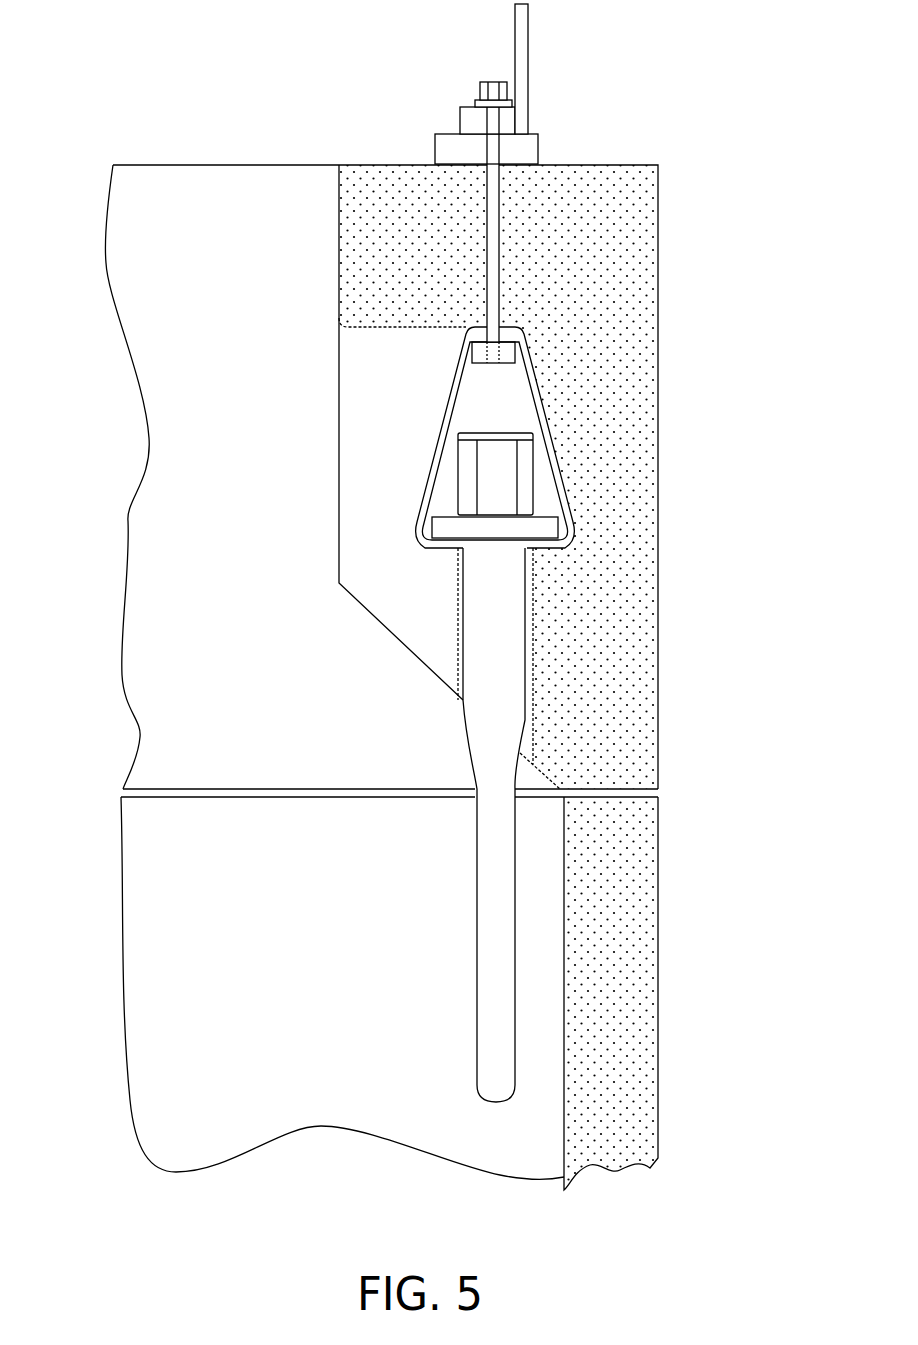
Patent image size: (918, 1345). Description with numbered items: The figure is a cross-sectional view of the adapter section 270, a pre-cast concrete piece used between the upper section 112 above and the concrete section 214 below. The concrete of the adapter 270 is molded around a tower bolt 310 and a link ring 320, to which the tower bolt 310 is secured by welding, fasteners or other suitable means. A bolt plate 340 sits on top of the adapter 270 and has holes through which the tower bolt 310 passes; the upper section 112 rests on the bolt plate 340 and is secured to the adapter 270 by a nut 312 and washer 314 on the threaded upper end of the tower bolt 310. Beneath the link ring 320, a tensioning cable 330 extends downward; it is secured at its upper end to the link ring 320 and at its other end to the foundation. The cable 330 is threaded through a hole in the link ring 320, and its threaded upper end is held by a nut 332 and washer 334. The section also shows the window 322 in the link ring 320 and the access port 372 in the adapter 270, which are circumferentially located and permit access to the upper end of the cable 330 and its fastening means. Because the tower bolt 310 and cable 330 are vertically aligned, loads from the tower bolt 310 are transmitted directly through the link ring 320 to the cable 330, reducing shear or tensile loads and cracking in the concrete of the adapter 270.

The upper section 112 is at (522, 27).
The washer 314 is at (475, 100).
The nut 312 is at (508, 90).
The bolt plate 340 is at (435, 152).
The tower bolt 310 is at (495, 249).
The link ring 320 is at (547, 397).
The window 322 is at (445, 428).
The nut 332 is at (525, 498).
The washer 334 is at (443, 523).
The access port 372 is at (358, 570).
The adapter section 270 is at (632, 647).
The tensioning cable 330 is at (496, 963).
The concrete section 214 is at (627, 1022).